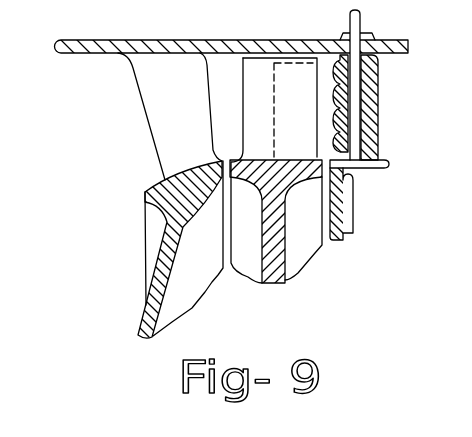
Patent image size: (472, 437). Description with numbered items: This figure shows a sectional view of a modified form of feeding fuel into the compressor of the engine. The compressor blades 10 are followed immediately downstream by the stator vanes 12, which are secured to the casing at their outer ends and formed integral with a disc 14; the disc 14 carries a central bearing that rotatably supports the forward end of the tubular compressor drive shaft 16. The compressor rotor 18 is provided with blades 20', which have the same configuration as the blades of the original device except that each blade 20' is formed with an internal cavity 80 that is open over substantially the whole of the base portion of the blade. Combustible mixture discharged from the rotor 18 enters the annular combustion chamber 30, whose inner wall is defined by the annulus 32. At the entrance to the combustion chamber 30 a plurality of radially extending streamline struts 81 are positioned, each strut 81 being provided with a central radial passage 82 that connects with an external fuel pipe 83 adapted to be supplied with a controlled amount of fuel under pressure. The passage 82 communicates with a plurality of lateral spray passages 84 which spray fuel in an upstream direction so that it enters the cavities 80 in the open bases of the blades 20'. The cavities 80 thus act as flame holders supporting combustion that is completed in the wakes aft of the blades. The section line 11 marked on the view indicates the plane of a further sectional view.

The compressor blades 10 is at (323, 0).
The section line 11 is at (243, 103).
The stator vanes 12 is at (176, 109).
The disc 14 is at (163, 243).
The tubular compressor drive shaft 16 is at (196, 40).
The compressor rotor 18 is at (285, 218).
The blades 20' is at (276, 170).
The combustion chamber 30 is at (408, 135).
The annulus 32 is at (382, 168).
The internal cavity 80 is at (291, 66).
The streamline strut 81 is at (378, 146).
The central radial passage 82 is at (356, 77).
The external fuel pipe 83 is at (360, 14).
The lateral spray passages 84 is at (335, 100).